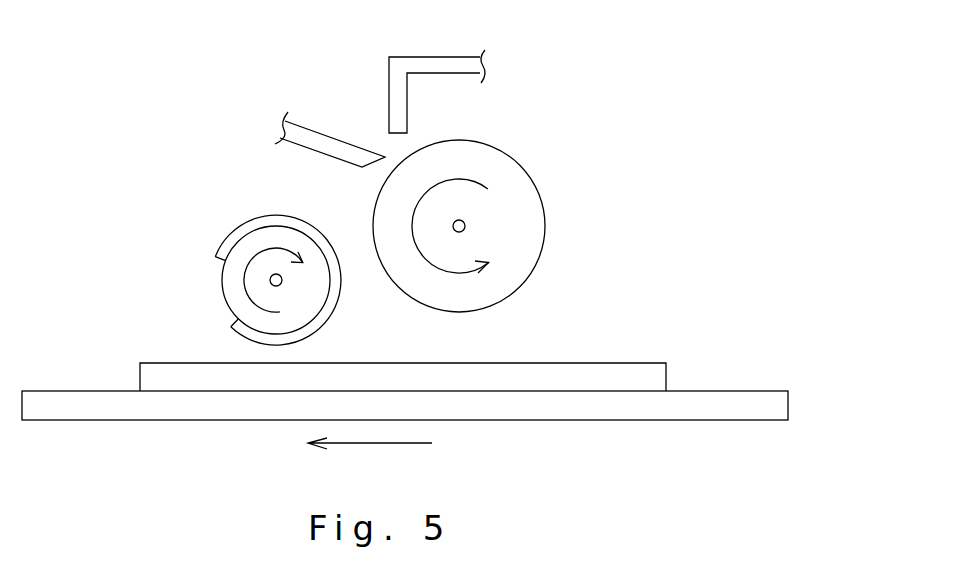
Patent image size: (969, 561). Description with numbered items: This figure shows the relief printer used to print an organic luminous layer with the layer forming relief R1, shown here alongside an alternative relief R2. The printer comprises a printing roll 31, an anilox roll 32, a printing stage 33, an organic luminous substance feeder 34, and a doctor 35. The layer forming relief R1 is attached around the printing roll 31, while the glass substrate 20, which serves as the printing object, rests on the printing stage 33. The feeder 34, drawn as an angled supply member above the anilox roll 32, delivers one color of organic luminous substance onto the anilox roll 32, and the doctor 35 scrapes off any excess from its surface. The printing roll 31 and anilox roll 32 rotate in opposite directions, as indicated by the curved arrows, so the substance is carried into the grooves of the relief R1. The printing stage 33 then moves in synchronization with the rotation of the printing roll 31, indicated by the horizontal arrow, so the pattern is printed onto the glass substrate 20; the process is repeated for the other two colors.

The glass substrate 20 is at (612, 367).
The printing roll 31 is at (223, 231).
The anilox roll 32 is at (520, 180).
The printing stage 33 is at (63, 413).
The organic luminous substance feeder 34 is at (440, 62).
The doctor 35 is at (313, 137).
The layer forming relief R1 is at (248, 218).
The rotation direction of second roller R2 is at (133, 168).